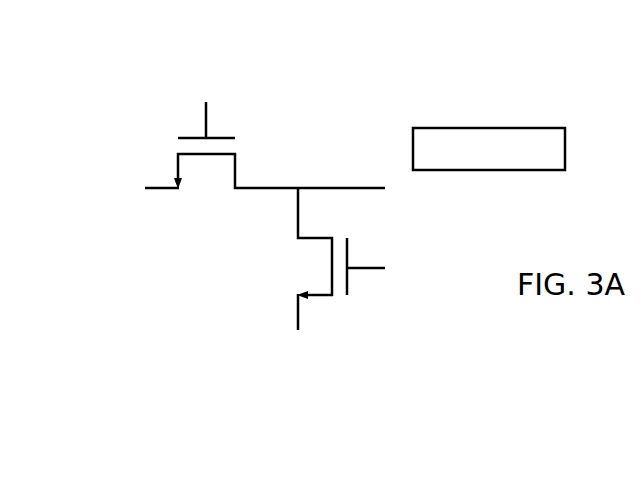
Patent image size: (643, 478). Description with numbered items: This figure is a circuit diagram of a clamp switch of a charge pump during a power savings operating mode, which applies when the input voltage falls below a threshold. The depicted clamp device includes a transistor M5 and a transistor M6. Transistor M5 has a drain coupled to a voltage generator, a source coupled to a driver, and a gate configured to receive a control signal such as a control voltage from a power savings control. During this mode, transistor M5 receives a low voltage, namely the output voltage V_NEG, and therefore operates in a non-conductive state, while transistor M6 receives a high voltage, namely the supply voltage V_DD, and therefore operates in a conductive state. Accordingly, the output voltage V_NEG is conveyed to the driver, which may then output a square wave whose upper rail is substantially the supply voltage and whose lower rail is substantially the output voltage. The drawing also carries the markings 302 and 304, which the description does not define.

The power down control circuit 302 is at (572, 78).
The second circuit 304 is at (528, 474).
The transistor M5 is at (265, 157).
The transistor M6 is at (330, 259).